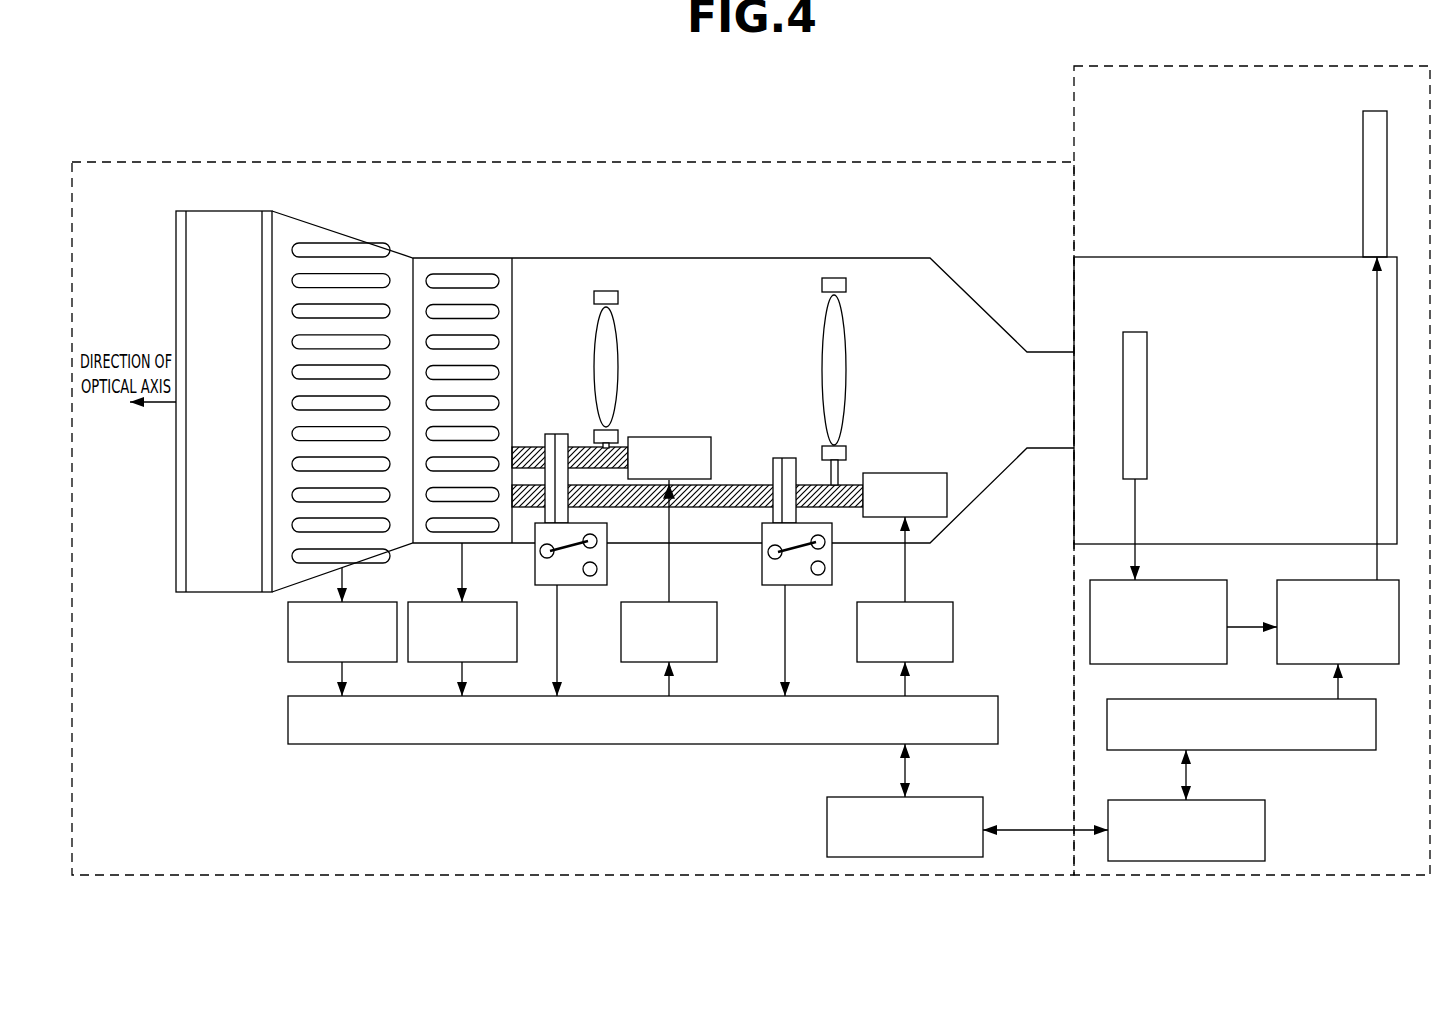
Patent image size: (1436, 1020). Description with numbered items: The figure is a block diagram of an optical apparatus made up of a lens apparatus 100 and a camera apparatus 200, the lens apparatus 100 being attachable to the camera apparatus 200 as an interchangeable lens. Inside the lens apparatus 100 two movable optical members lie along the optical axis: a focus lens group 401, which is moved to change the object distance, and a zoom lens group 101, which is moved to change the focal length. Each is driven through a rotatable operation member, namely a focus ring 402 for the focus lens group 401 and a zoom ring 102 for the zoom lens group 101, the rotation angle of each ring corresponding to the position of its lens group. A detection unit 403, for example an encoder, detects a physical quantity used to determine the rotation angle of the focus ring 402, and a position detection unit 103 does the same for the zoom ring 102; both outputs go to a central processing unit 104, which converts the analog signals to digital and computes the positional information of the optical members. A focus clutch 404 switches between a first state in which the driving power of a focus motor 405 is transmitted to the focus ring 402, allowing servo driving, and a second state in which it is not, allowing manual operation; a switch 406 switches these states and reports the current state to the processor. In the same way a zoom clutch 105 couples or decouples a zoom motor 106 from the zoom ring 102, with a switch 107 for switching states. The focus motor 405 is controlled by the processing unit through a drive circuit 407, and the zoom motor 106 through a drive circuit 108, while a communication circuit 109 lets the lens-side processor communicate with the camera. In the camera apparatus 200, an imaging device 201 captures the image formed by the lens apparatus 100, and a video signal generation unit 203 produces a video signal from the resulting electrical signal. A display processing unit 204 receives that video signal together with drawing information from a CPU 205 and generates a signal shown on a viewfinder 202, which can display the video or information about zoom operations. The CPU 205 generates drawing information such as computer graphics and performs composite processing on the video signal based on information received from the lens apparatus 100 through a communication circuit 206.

The lens apparatus 100 is at (248, 162).
The camera apparatus 200 is at (1173, 66).
The focus ring 402 is at (300, 242).
The zoom ring 102 is at (459, 262).
The focus lens group 401 is at (618, 338).
The zoom lens group 101 is at (846, 350).
The focus clutch 404 is at (556, 434).
The focus motor 405 is at (670, 437).
The zoom clutch 105 is at (786, 458).
The zoom motor 106 is at (905, 473).
The switch 406 is at (595, 585).
The switch 107 is at (823, 585).
The detection unit 403 is at (288, 637).
The position detection unit 103 is at (492, 602).
The drive circuit 407 is at (698, 602).
The drive circuit 108 is at (932, 602).
The central processing unit 104 is at (288, 724).
The communication circuit 109 is at (827, 827).
The imaging device 201 is at (1147, 371).
The viewfinder 202 is at (1363, 150).
The video signal generation unit 203 is at (1163, 580).
The display processing unit 204 is at (1322, 664).
The CPU 205 is at (1313, 750).
The communication circuit 206 is at (1265, 829).